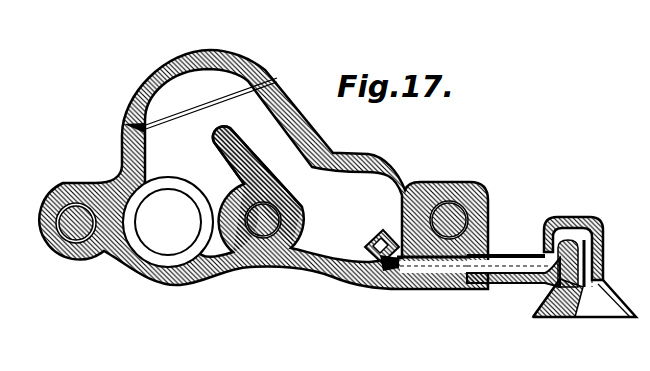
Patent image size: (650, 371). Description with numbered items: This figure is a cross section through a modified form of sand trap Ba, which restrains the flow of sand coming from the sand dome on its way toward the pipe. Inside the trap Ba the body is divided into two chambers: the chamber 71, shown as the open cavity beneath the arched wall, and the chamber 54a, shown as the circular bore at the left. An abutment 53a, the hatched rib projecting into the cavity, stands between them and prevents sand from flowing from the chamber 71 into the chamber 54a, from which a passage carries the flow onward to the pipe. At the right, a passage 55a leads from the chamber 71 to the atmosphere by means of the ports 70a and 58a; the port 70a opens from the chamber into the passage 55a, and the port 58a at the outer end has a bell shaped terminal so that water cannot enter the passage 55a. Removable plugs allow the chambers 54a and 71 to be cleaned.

The trap Ba is at (288, 87).
The abutment 53a is at (238, 144).
The chamber 54a is at (216, 248).
The port 70a is at (377, 236).
The chamber 71 is at (337, 257).
The passage 55a is at (443, 267).
The port 58a is at (587, 283).